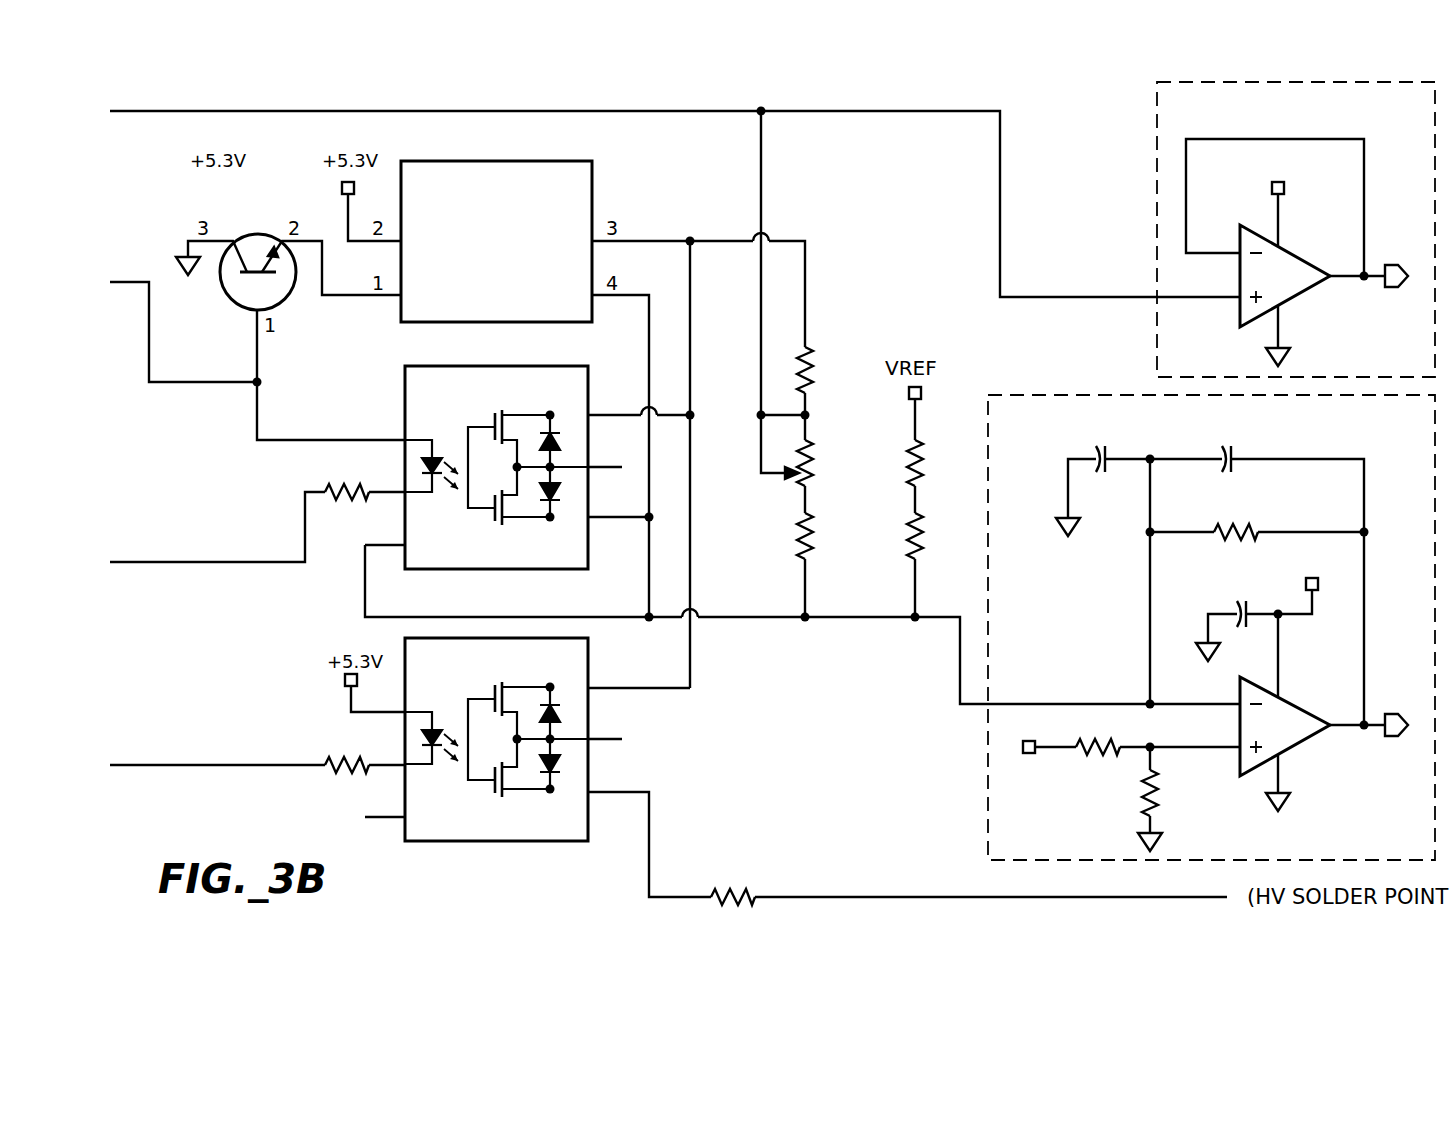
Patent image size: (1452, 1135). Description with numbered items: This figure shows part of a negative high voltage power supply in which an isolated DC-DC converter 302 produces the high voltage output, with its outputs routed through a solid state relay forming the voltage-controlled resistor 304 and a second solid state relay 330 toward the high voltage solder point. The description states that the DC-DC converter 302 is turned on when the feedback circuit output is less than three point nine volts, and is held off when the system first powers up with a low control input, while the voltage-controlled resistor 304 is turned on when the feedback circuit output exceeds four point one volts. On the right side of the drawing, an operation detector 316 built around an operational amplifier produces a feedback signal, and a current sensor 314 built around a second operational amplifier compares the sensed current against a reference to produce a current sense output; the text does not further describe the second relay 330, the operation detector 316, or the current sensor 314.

The DC-DC converter 302 is at (592, 187).
The voltage-controlled resistor 304 is at (540, 571).
The second solid state relay K2 330 is at (485, 843).
The operation detector 316 is at (1157, 160).
The current sensor 314 is at (1125, 395).